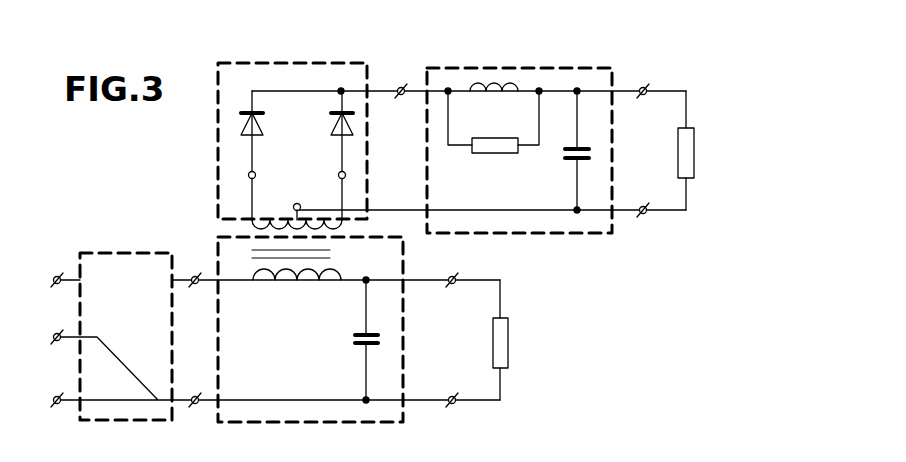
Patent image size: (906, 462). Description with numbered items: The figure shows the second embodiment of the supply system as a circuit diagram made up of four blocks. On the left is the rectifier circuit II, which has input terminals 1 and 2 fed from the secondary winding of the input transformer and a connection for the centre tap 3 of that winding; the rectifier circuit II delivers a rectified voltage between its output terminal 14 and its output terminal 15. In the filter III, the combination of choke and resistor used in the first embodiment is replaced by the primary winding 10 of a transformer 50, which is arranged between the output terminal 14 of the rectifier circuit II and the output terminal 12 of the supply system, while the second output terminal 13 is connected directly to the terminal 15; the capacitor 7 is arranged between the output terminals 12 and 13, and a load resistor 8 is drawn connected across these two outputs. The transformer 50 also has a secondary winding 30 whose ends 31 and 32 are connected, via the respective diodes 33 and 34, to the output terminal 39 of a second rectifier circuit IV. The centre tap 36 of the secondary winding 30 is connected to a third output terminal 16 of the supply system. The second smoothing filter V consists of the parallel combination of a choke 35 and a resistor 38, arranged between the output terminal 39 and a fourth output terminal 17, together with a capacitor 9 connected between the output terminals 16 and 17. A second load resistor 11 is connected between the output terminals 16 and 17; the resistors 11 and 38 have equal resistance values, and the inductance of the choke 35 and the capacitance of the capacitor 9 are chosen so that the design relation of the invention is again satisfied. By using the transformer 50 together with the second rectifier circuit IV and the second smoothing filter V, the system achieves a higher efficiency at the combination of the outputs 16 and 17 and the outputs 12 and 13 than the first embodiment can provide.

The input terminal 1 is at (54, 278).
The input terminal 2 is at (54, 396).
The centre tap 3 is at (54, 334).
The capacitor 7 is at (357, 346).
The load resistor 8 is at (509, 341).
The capacitor 9 is at (569, 162).
The primary winding 10 is at (300, 284).
The second load resistor 11 is at (694, 147).
The output terminal 12 is at (454, 277).
The second output terminal 13 is at (455, 396).
The output terminal 14 is at (193, 275).
The output terminal 15 is at (193, 405).
The third output terminal 16 is at (646, 214).
The fourth output terminal 17 is at (645, 85).
The secondary winding 30 is at (342, 241).
The end of secondary winding 31 is at (263, 172).
The end of secondary winding 32 is at (338, 176).
The diode 33 is at (264, 126).
The diode 34 is at (331, 124).
The choke 35 is at (495, 83).
The centre tap 36 is at (294, 205).
The resistor 38 is at (495, 154).
The output terminal 39 is at (402, 84).
The transformer 50 is at (260, 254).
The rectifier circuit II is at (110, 252).
The filter III is at (272, 425).
The second rectifier circuit IV is at (252, 62).
The second smoothing filter V is at (566, 67).